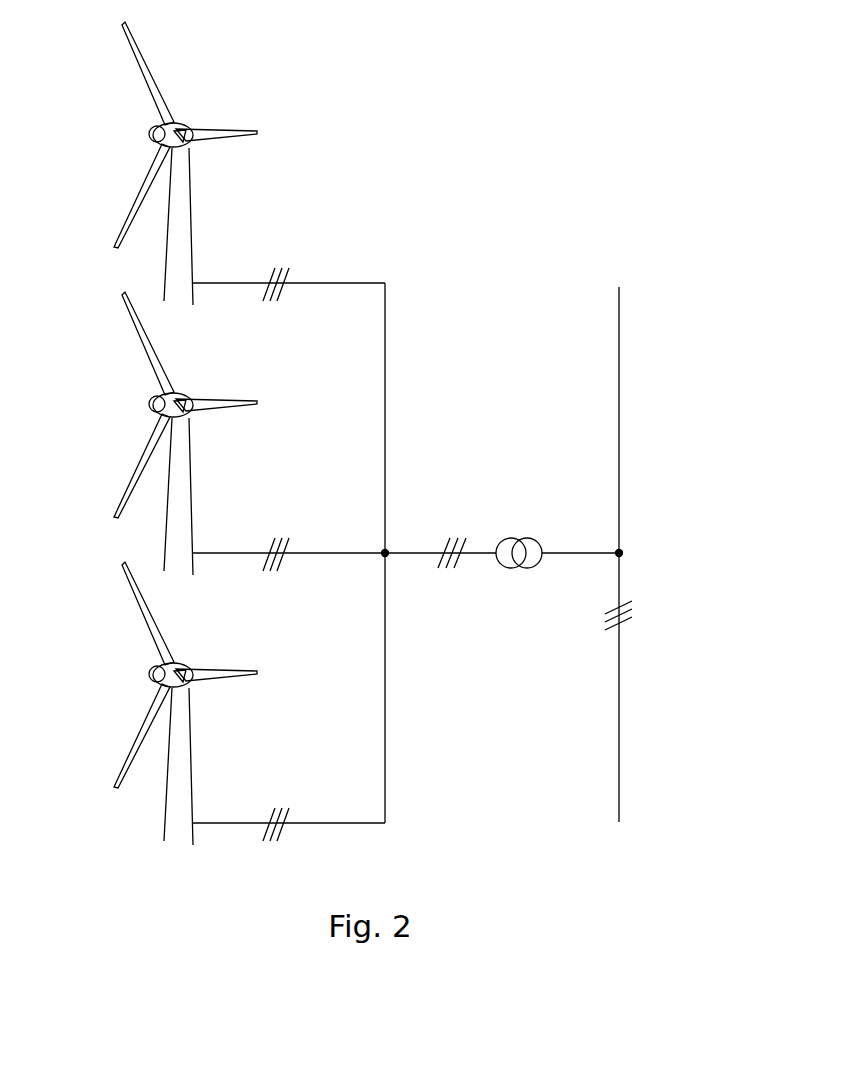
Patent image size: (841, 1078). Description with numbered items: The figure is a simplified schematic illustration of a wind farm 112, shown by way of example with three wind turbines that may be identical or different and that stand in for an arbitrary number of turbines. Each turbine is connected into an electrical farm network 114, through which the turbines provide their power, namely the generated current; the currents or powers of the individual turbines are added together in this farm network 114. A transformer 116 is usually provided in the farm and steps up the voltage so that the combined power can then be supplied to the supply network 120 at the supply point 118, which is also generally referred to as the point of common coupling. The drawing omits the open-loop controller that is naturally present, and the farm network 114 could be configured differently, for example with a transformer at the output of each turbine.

The wind farm 112 is at (448, 138).
The electrical farm network 114 is at (403, 552).
The transformer 116 is at (521, 537).
The supply point 118 is at (625, 541).
The supply network 120 is at (619, 313).